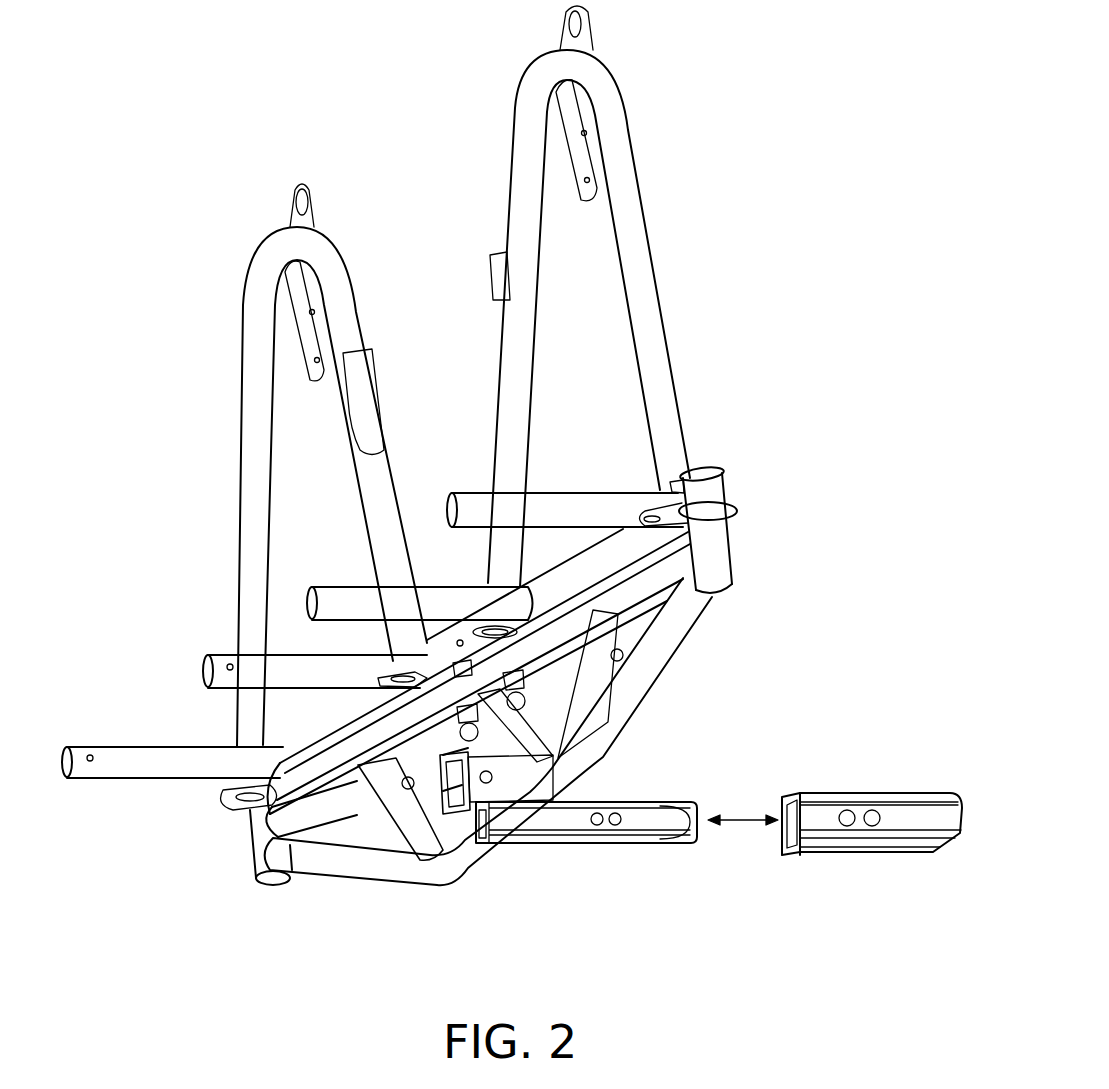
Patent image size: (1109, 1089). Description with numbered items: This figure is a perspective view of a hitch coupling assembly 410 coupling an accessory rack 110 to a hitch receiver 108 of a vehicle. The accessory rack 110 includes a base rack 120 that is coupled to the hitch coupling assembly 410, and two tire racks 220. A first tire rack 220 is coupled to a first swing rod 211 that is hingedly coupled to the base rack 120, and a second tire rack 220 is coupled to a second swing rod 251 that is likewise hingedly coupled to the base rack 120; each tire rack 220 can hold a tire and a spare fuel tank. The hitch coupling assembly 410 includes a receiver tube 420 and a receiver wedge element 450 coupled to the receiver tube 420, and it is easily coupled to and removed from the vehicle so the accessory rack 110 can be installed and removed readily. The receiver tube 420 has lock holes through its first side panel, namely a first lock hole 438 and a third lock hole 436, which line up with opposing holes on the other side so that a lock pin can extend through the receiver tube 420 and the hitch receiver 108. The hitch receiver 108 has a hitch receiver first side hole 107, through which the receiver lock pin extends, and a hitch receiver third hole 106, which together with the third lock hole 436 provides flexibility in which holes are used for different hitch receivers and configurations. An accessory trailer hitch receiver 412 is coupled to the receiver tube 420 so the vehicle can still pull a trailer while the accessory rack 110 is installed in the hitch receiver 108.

The accessory rack 110 is at (118, 66).
The tire rack 220 is at (622, 184).
The second swing rod 251 is at (600, 557).
The first swing rod 211 is at (347, 724).
The base rack 120 is at (678, 625).
The accessory trailer hitch receiver 412 is at (443, 783).
The hitch coupling assembly 410 is at (522, 866).
The receiver tube 420 is at (579, 833).
The third lock hole 436 is at (599, 812).
The first lock hole 438 is at (617, 825).
The receiver wedge element 450 is at (682, 815).
The hitch receiver 108 is at (907, 792).
The hitch receiver third hole 106 is at (850, 827).
The hitch receiver first side hole 107 is at (881, 822).